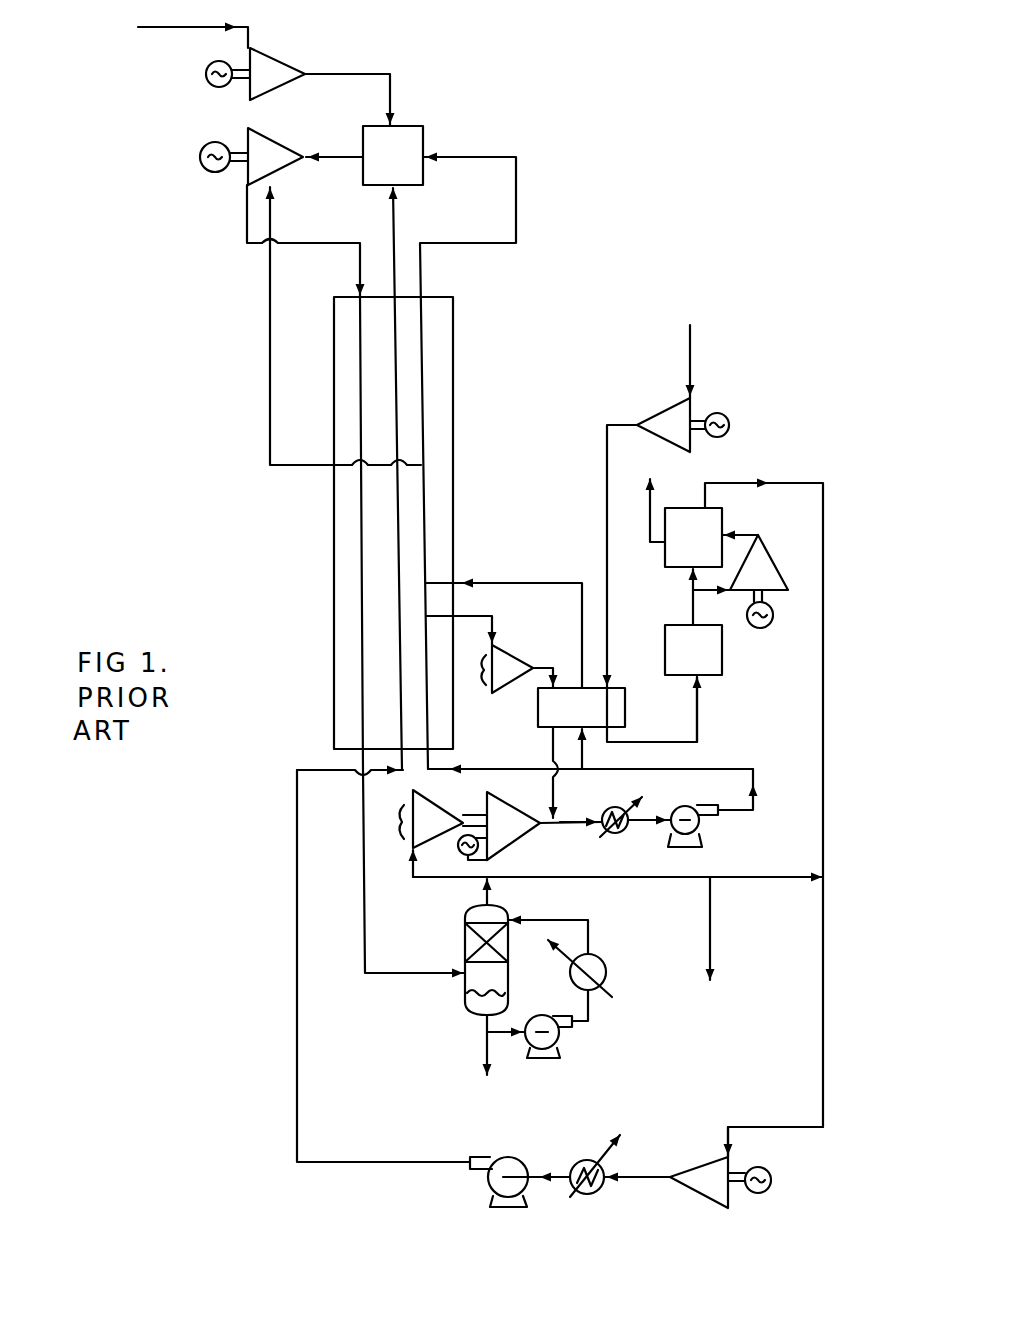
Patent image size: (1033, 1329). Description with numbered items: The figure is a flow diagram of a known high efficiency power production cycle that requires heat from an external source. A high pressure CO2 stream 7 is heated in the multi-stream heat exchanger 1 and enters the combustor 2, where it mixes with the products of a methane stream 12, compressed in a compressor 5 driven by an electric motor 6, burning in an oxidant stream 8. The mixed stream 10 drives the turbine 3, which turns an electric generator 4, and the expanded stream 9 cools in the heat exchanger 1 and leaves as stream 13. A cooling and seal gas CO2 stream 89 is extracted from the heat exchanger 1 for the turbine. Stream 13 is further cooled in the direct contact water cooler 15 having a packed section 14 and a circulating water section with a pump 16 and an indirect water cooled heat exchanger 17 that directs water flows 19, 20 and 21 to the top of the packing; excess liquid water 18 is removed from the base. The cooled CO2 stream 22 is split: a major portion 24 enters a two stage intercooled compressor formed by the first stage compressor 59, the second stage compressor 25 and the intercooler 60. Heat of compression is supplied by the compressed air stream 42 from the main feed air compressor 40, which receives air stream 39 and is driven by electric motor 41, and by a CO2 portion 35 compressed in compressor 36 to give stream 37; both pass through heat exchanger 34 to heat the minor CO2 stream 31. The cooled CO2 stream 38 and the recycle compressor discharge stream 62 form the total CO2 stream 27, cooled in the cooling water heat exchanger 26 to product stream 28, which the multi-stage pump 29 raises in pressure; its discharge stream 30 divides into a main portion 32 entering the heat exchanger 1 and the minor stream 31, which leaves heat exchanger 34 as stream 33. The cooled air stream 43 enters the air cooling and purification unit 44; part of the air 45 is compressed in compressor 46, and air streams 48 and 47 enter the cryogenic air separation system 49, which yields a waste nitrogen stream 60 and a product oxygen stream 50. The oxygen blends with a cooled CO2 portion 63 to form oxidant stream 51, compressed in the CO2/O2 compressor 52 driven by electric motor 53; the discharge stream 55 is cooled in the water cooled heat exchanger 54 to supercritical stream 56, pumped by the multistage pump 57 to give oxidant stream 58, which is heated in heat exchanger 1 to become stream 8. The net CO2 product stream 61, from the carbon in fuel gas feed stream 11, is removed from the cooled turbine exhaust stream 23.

The multi-stream heat exchanger 1 is at (393, 523).
The combustor 2 is at (393, 155).
The turbine 3 is at (275, 156).
The electric generator 4 is at (214, 157).
The compressor 5 is at (277, 74).
The electric motor 6 is at (220, 74).
The CO2 stream 7 is at (468, 461).
The oxidant stream 8 is at (402, 479).
The turbine exhaust stream 9 is at (306, 241).
The mixed stream 10 is at (334, 167).
The fuel gas feed stream 11 is at (193, 25).
The methane stream 12 is at (350, 87).
The cooled turbine exhaust stream 13 is at (350, 816).
The packed section 14 is at (486, 942).
The direct contact water cooler 15 is at (434, 656).
The pump 16 is at (556, 1036).
The indirect water cooled heat exchanger 17 is at (591, 967).
The excess liquid water 18 is at (471, 1045).
The water flow 19 is at (506, 1042).
The water flow 20 is at (596, 1005).
The water flow 21 is at (563, 935).
The cooled CO2 stream 22 is at (475, 890).
The cooled turbine exhaust stream 23 is at (617, 886).
The major portion 24 is at (429, 863).
The second stage compressor 25 is at (513, 826).
The cooling water heat exchanger 26 is at (622, 825).
The total CO2 stream 27 is at (581, 833).
The product stream 28 is at (649, 829).
The multi-stage pump 29 is at (698, 826).
The discharge stream 30 is at (751, 789).
The minor stream 31 is at (595, 749).
The main portion 32 is at (590, 759).
The heated minor stream 33 is at (504, 634).
The heat exchanger 34 is at (581, 707).
The CO2 portion 35 is at (461, 617).
The compressor 36 is at (507, 669).
The compressed CO2 stream 37 is at (547, 666).
The cooled CO2 stream 38 is at (544, 772).
The air stream 39 is at (705, 361).
The main feed air compressor 40 is at (663, 425).
The electric motor 41 is at (723, 425).
The adiabatically compressed air stream 42 is at (650, 583).
The cooled air stream 43 is at (683, 709).
The air cooling and purification unit 44 is at (693, 650).
The air stream portion 45 is at (712, 599).
The compressor 46 is at (759, 581).
The air stream 47 is at (742, 524).
The air stream 48 is at (680, 596).
The pumped liquid oxygen cycle air separation cryogenic system 49 is at (693, 537).
The product oxygen stream 50 is at (764, 806).
The oxidant stream 51 is at (774, 1128).
The CO2/O2 compressor 52 is at (699, 1182).
The electric motor 53 is at (763, 1180).
The water cooled heat exchanger 54 is at (596, 1169).
The discharge stream 55 is at (637, 1168).
The supercritical fluid stream 56 is at (541, 1165).
The multistage pump 57 is at (495, 1182).
The oxidant stream 58 is at (383, 966).
The first stage compressor 59 is at (443, 819).
The intercooler / waste nitrogen stream 60 is at (555, 656).
The net CO2 product stream 61 is at (725, 928).
The CO2 recycle compressor discharge stream 62 is at (568, 831).
The cooled CO2 portion 63 is at (788, 867).
The cooling and seal gas CO2 stream 89 is at (330, 326).